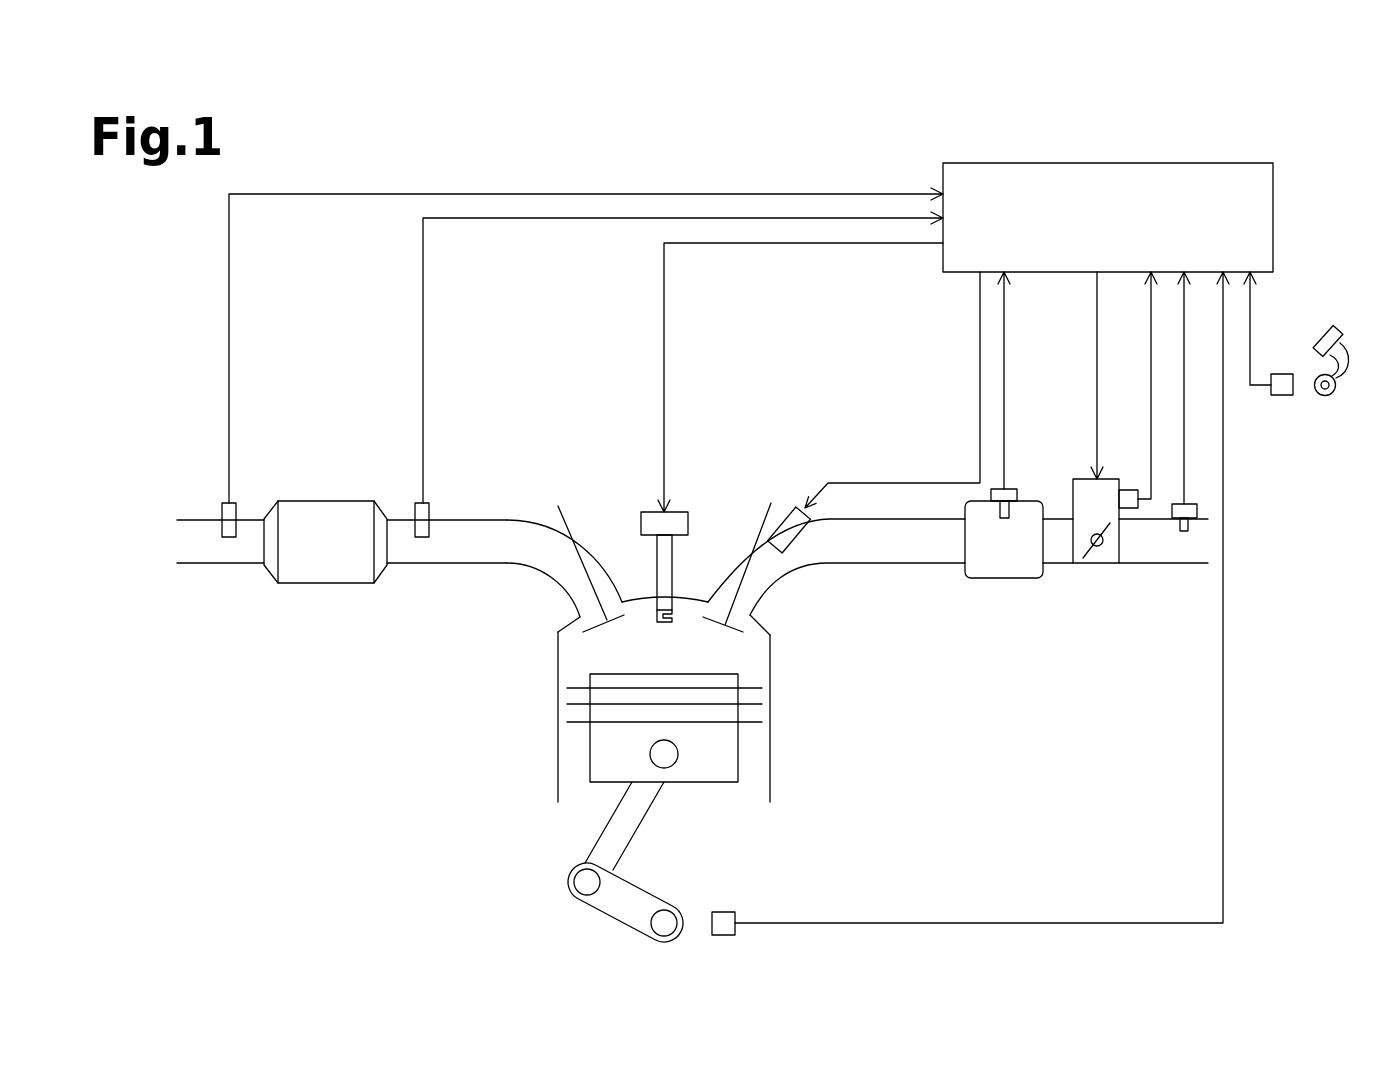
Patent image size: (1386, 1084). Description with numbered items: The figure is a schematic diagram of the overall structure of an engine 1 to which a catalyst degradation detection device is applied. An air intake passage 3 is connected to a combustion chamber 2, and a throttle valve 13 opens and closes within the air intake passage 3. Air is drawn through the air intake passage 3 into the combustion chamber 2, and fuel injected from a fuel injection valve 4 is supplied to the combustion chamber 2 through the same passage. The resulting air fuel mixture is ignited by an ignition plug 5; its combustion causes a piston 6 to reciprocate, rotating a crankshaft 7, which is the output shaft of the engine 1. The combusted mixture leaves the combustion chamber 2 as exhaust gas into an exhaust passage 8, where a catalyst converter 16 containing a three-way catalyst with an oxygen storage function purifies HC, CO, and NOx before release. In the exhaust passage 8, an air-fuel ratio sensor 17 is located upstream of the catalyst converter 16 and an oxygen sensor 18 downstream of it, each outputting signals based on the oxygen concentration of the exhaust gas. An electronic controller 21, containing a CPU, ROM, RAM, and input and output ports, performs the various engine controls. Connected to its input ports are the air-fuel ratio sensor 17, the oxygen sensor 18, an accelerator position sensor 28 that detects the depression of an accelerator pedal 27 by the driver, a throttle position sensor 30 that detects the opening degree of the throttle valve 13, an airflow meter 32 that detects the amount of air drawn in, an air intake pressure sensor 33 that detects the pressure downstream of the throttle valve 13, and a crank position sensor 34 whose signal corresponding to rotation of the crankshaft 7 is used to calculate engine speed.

The engine 1 is at (499, 723).
The combustion chamber 2 is at (572, 657).
The air intake passage 3 is at (890, 555).
The fuel injection valve 4 is at (817, 527).
The ignition plug 5 is at (657, 558).
The piston 6 is at (707, 773).
The crankshaft 7 is at (667, 913).
The exhaust passage 8 is at (500, 563).
The throttle valve 13 is at (1086, 560).
The catalyst converter 16 is at (324, 501).
The air-fuel ratio sensor 17 is at (430, 508).
The oxygen sensor 18 is at (229, 503).
The electronic controller 21 is at (1275, 218).
The accelerator pedal 27 is at (1318, 335).
The accelerator position sensor 28 is at (1283, 398).
The throttle position sensor 30 is at (1133, 490).
The airflow meter 32 is at (1190, 503).
The air intake pressure sensor 33 is at (1015, 488).
The crank position sensor 34 is at (728, 911).